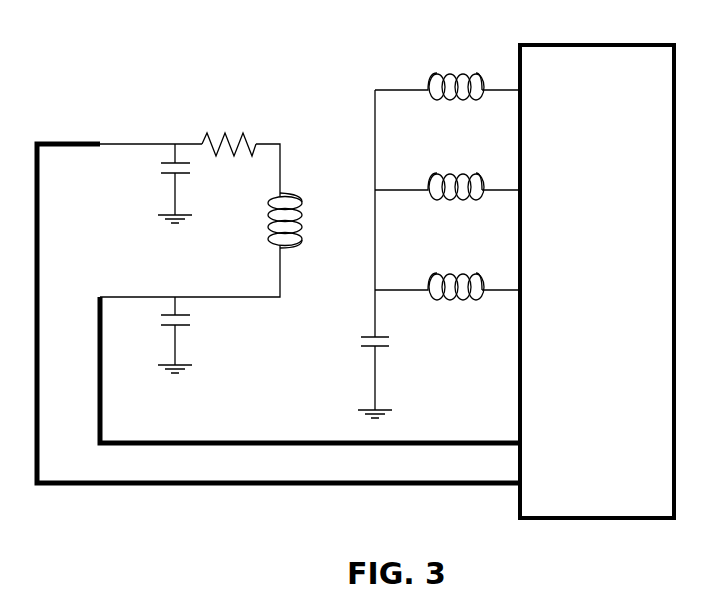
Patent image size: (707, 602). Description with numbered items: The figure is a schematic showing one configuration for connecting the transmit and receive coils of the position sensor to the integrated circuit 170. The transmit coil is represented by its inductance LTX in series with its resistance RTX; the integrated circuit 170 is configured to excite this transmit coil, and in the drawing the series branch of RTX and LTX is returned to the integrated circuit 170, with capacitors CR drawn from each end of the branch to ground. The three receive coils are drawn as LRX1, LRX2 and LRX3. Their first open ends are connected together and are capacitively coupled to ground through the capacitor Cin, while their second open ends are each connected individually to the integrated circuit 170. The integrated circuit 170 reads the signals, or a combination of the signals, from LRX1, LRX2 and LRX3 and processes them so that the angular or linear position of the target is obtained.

The integrated circuit 170 is at (597, 281).
The transmit coil resistance RTX is at (229, 128).
The transmit coil inductance LTX is at (305, 220).
The resonant capacitor CR is at (157, 258).
The input capacitor Cin is at (394, 372).
The first receive coil LRX1 is at (447, 269).
The second receive coil LRX2 is at (447, 169).
The third receive coil LRX3 is at (447, 69).